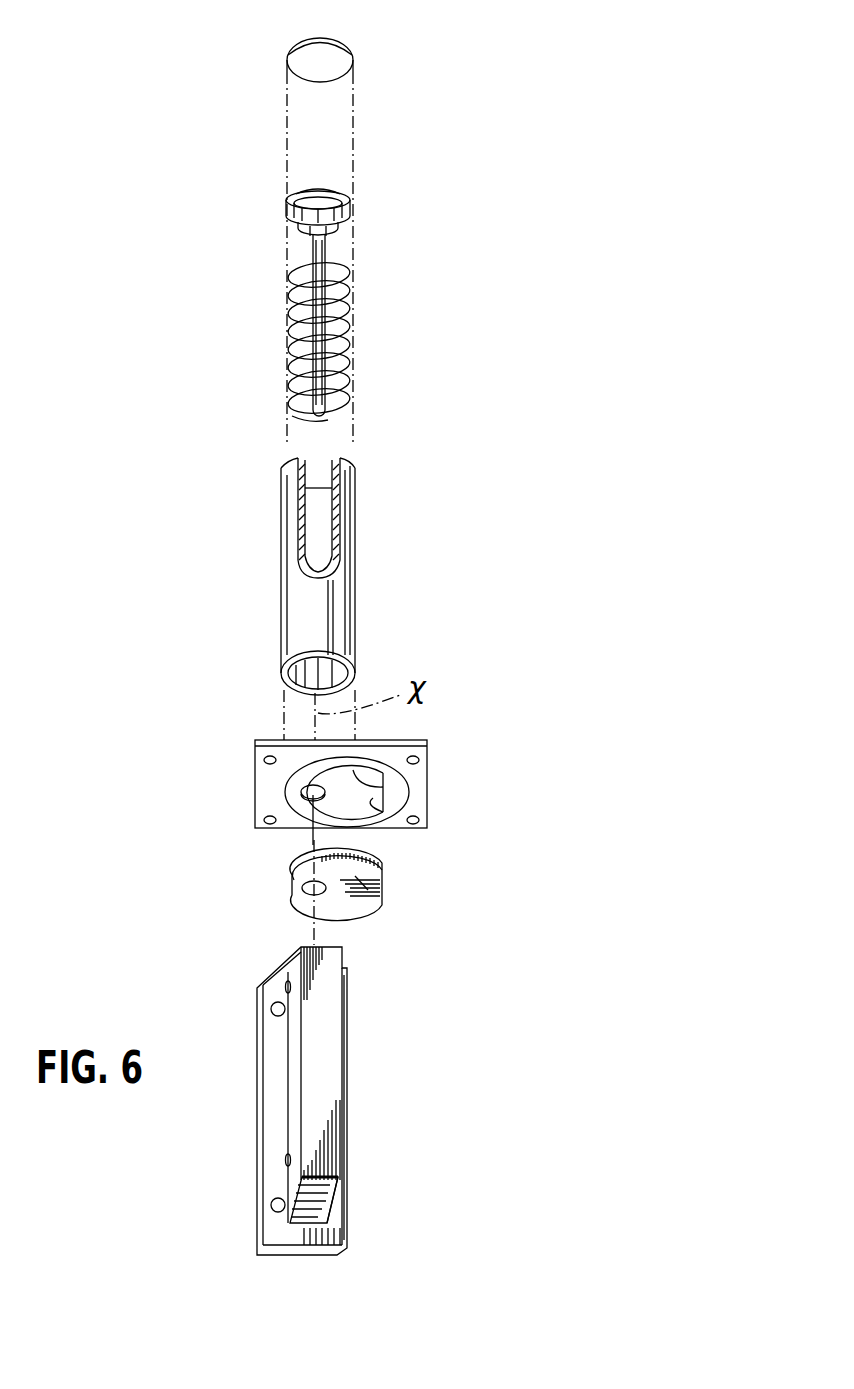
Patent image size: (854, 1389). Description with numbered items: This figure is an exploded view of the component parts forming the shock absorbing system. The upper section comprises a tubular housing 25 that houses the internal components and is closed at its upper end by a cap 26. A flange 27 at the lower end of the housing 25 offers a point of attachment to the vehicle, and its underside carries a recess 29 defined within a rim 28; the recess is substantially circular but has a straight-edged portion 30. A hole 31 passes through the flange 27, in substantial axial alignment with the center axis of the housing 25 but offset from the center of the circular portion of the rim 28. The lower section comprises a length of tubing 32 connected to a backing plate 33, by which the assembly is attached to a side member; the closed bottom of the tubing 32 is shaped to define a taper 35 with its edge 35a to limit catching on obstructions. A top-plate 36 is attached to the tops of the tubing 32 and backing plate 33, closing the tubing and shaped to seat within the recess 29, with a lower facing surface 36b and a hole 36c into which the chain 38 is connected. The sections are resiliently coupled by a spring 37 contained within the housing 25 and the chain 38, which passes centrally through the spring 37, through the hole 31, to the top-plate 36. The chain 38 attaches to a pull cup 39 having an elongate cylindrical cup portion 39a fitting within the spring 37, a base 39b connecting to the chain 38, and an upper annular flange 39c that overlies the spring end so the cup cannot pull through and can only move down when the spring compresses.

The cap 26 is at (300, 64).
The pull cup 39 is at (316, 184).
The elongate cup portion 39a is at (287, 212).
The base 39b is at (303, 230).
The upper annular flange 39c is at (340, 196).
The chain 38 is at (310, 256).
The spring 37 is at (348, 348).
The tubular housing 25 is at (355, 614).
The flange 27 is at (331, 768).
The rim 28 is at (383, 790).
The recess 29 is at (295, 797).
The straight-edged portion 30 is at (377, 795).
The hole 31 is at (313, 788).
The top-plate 36 is at (351, 897).
The lower facing surface 36b is at (358, 886).
The hole 36c is at (302, 893).
The backing plate 33 is at (347, 975).
The tubing 32 is at (353, 1101).
The taper 35 is at (325, 1172).
The stop plate edge 35a is at (346, 1182).